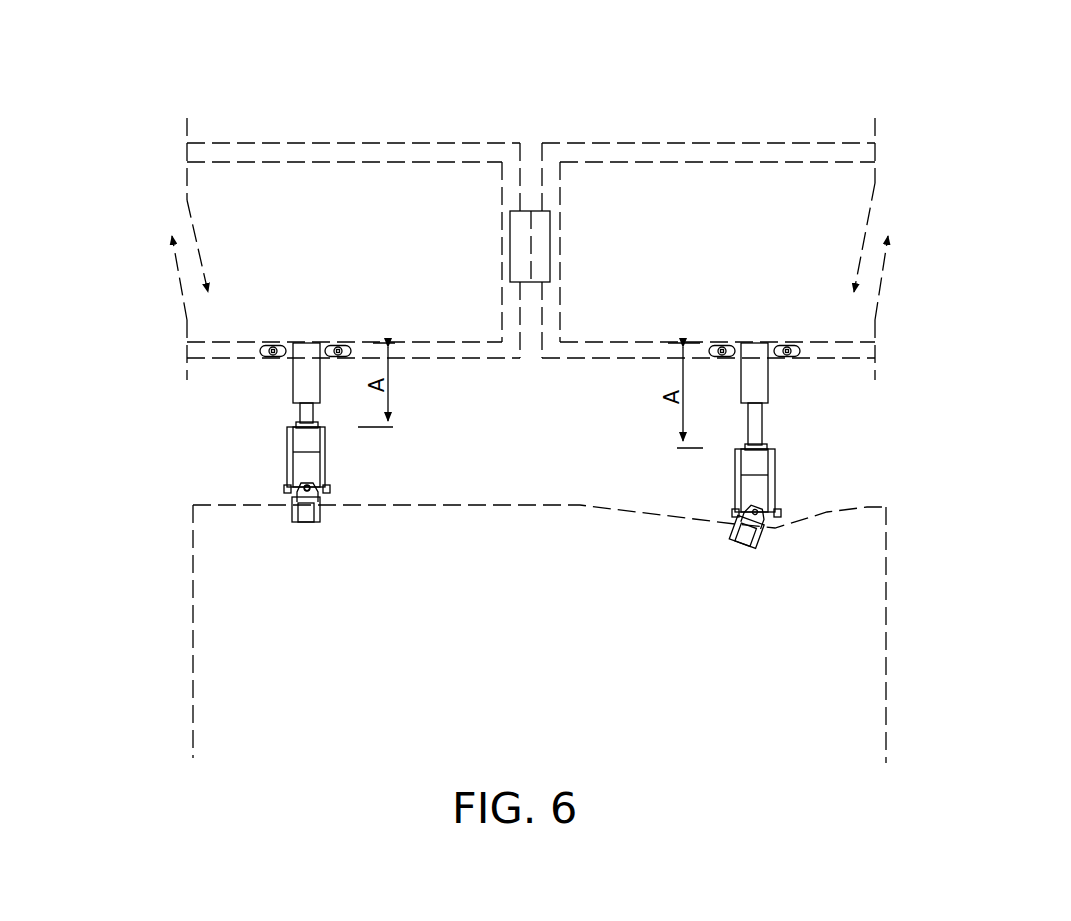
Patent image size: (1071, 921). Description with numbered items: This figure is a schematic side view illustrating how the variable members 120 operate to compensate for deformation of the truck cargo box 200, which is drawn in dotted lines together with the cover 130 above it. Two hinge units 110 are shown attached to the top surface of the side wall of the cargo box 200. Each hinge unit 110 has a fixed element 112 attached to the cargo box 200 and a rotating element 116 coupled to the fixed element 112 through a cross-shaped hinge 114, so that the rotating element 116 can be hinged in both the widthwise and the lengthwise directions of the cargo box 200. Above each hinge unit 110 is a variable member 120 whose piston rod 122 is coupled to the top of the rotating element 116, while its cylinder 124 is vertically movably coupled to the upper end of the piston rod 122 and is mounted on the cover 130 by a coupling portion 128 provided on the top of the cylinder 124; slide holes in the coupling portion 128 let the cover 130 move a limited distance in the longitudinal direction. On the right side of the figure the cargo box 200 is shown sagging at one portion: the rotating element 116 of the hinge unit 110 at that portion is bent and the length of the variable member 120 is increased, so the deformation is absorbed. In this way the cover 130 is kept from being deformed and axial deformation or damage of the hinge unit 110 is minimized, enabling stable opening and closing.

The cover 130 is at (592, 143).
The coupling portion 128 is at (333, 342).
The variable member 120 is at (514, 396).
The cylinder 124 is at (293, 388).
The piston rod 122 is at (300, 411).
The hinge unit 110 is at (511, 545).
The rotating element 116 is at (287, 457).
The fixed element 112 is at (308, 523).
The cross-shaped hinge 114 is at (307, 485).
The truck cargo box 200 is at (495, 505).